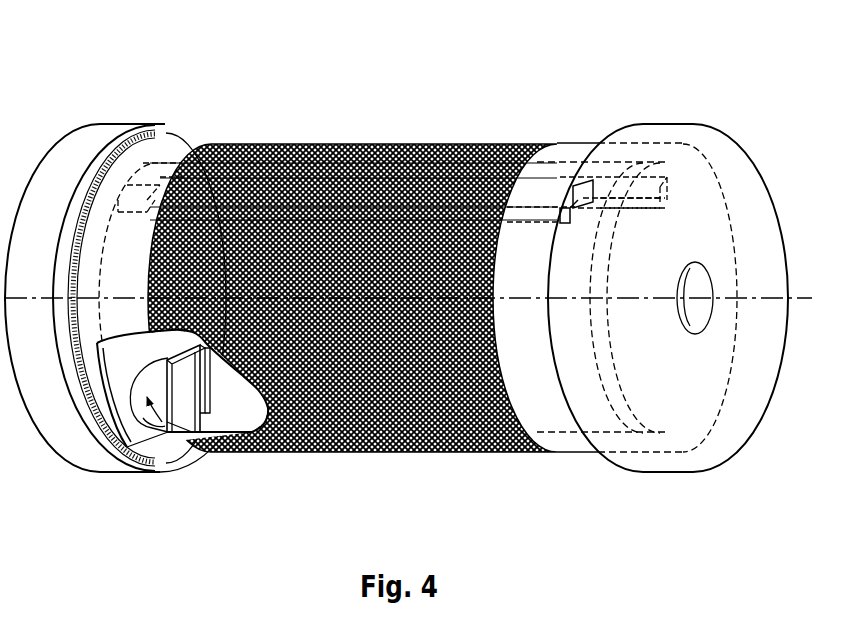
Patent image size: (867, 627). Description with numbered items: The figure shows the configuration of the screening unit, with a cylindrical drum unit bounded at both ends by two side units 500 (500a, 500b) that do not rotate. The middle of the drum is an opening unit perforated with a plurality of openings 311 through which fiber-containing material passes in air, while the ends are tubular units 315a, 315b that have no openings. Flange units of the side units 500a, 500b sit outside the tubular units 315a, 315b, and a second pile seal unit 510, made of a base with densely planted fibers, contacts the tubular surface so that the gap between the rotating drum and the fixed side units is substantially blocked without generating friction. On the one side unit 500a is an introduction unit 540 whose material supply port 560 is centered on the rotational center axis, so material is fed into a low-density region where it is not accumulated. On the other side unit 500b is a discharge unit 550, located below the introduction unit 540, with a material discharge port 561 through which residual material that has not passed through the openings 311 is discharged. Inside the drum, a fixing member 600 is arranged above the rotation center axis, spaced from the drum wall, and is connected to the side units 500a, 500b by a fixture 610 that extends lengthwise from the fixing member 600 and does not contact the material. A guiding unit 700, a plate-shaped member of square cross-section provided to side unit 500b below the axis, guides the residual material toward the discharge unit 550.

The side units 500 is at (406, 253).
The side unit 500a is at (672, 253).
The side unit 500b is at (72, 127).
The second pile seal unit 510 is at (143, 133).
The openings 311 is at (497, 142).
The tubular unit 315a is at (580, 153).
The tubular unit 315b is at (185, 143).
The introduction unit 540 is at (742, 268).
The material supply port 560 is at (697, 286).
The fixing member 600 is at (532, 223).
The fixture 610 is at (640, 213).
The discharge unit 550 is at (182, 414).
The material discharge port 561 is at (150, 426).
The guiding unit 700 is at (185, 436).